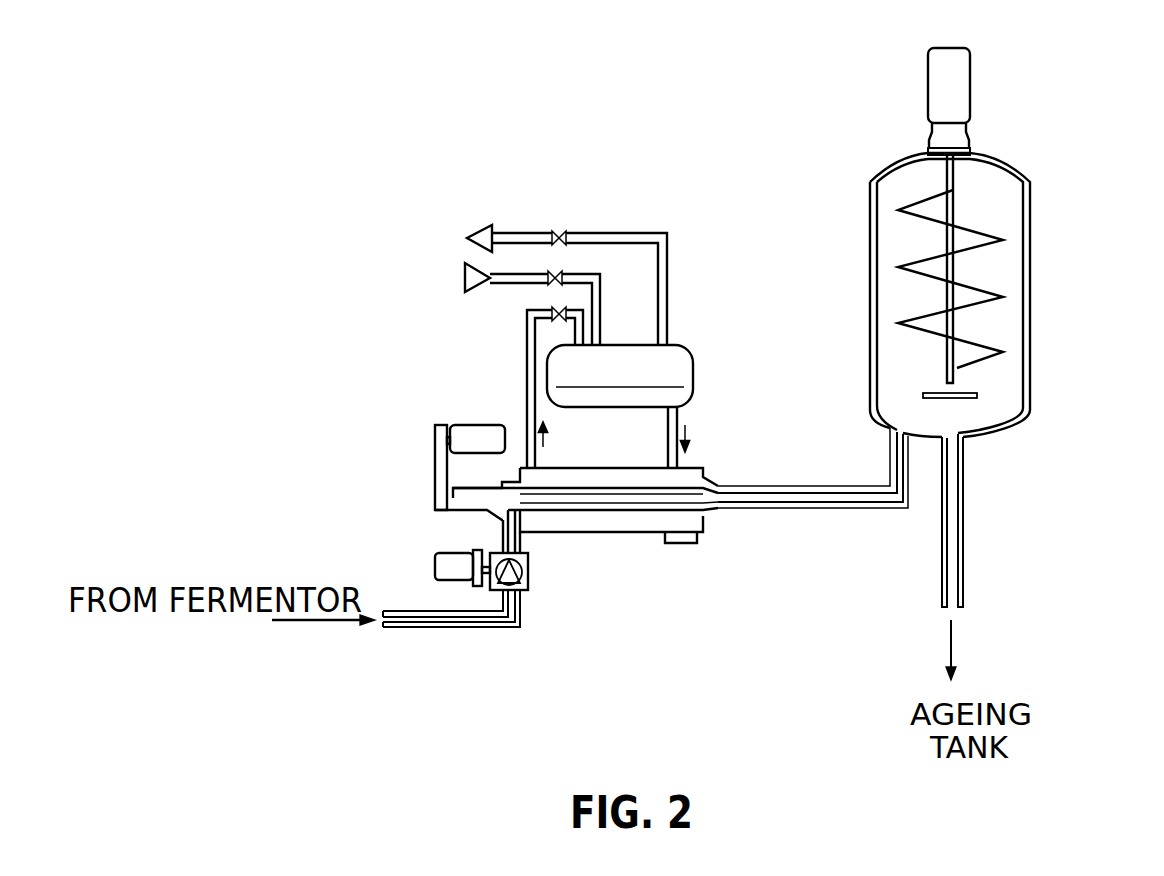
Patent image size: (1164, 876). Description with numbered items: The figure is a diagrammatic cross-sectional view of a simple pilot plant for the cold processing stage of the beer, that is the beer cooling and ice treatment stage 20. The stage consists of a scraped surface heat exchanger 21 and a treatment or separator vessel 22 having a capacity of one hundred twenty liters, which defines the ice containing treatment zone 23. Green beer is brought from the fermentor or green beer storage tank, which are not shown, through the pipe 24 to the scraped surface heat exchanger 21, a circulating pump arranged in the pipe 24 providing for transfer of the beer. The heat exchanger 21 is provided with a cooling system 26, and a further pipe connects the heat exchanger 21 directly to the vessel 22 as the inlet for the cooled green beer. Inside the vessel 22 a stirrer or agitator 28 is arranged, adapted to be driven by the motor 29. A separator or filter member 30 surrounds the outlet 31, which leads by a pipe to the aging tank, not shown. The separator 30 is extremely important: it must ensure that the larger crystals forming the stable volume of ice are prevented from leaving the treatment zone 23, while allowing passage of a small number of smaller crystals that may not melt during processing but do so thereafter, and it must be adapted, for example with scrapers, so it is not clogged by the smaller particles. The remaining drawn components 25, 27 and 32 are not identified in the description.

The beer cooling and ice treatment stage 20 is at (631, 671).
The scraped surface heat exchanger 21 is at (628, 532).
The treatment or separator vessel 22 is at (1022, 285).
The ice containing treatment zone 23 is at (868, 200).
The pipe 24 is at (430, 628).
The pump 25 is at (530, 580).
The cooling system 26 is at (687, 357).
The transfer pipe 27 is at (783, 508).
The stirrer or agitator 28 is at (1012, 233).
The motor 29 is at (968, 77).
The separator or filter member 30 is at (1003, 405).
The outlet 31 is at (955, 440).
The outlet pipe to ageing tank 32 is at (962, 570).